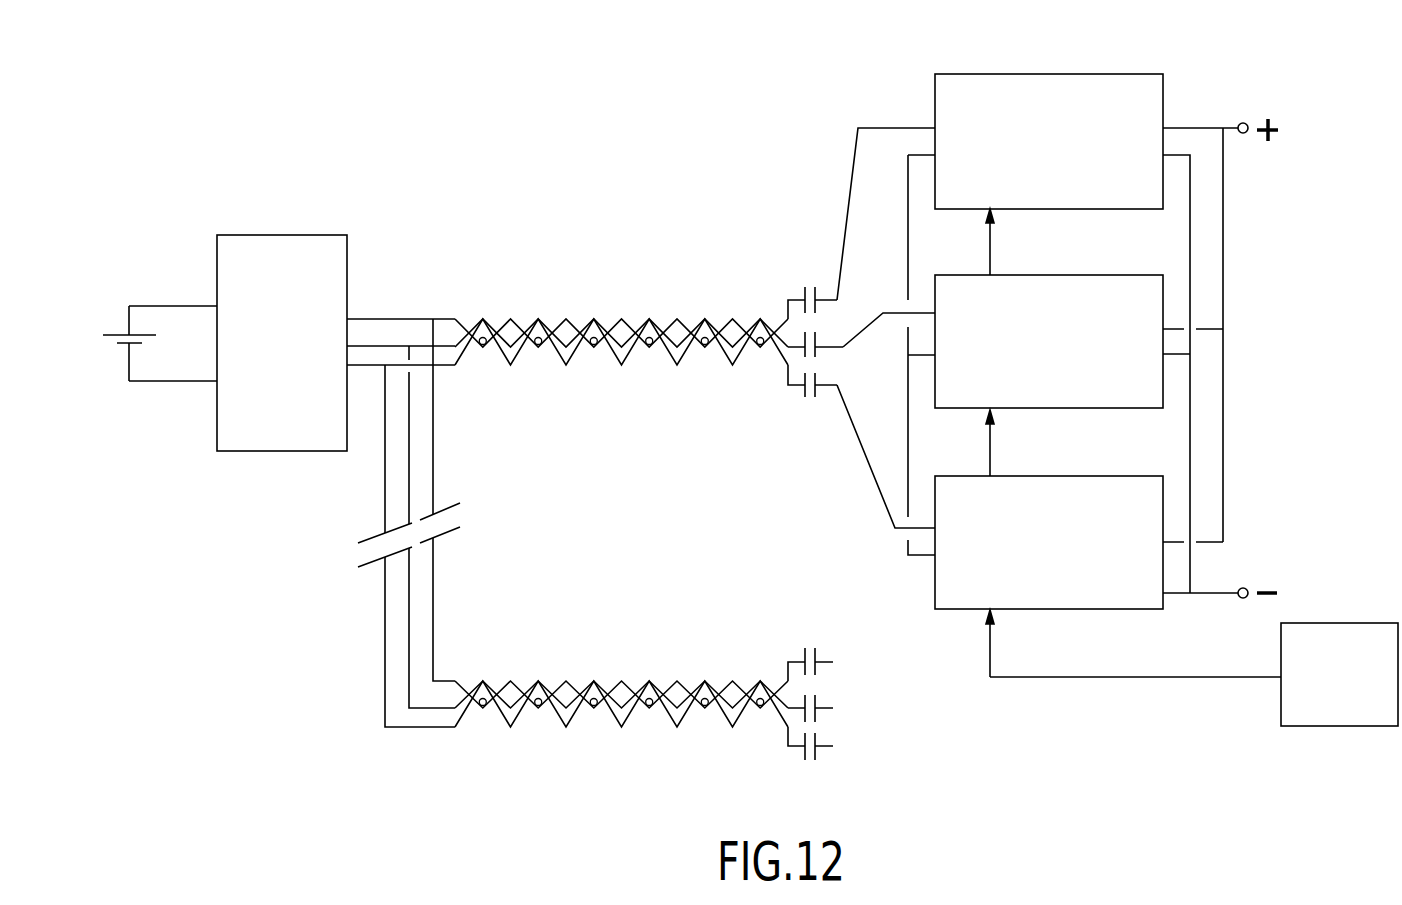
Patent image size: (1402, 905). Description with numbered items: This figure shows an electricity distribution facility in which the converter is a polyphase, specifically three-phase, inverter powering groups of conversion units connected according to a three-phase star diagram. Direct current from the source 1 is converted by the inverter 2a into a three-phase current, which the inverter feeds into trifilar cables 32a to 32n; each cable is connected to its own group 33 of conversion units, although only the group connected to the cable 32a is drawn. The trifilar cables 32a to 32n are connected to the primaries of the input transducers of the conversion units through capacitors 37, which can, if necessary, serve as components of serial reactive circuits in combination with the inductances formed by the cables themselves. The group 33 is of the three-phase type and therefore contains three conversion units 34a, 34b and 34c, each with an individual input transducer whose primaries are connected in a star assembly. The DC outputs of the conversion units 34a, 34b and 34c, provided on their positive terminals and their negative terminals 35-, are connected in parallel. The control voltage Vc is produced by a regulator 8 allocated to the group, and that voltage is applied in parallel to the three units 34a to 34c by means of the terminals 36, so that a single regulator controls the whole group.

The source 1 is at (113, 358).
The inverter 2a is at (295, 235).
The trifilar cable 32a is at (548, 319).
The trifilar cable 32n is at (548, 681).
The capacitors 37 is at (805, 332).
The group of conversion units 33 is at (1191, 80).
The conversion unit 34a is at (1092, 90).
The conversion unit 34b is at (1097, 290).
The conversion unit 34c is at (1093, 490).
The terminals 36 is at (993, 211).
The terminal 35- is at (1244, 588).
The regulator 8 is at (1339, 608).